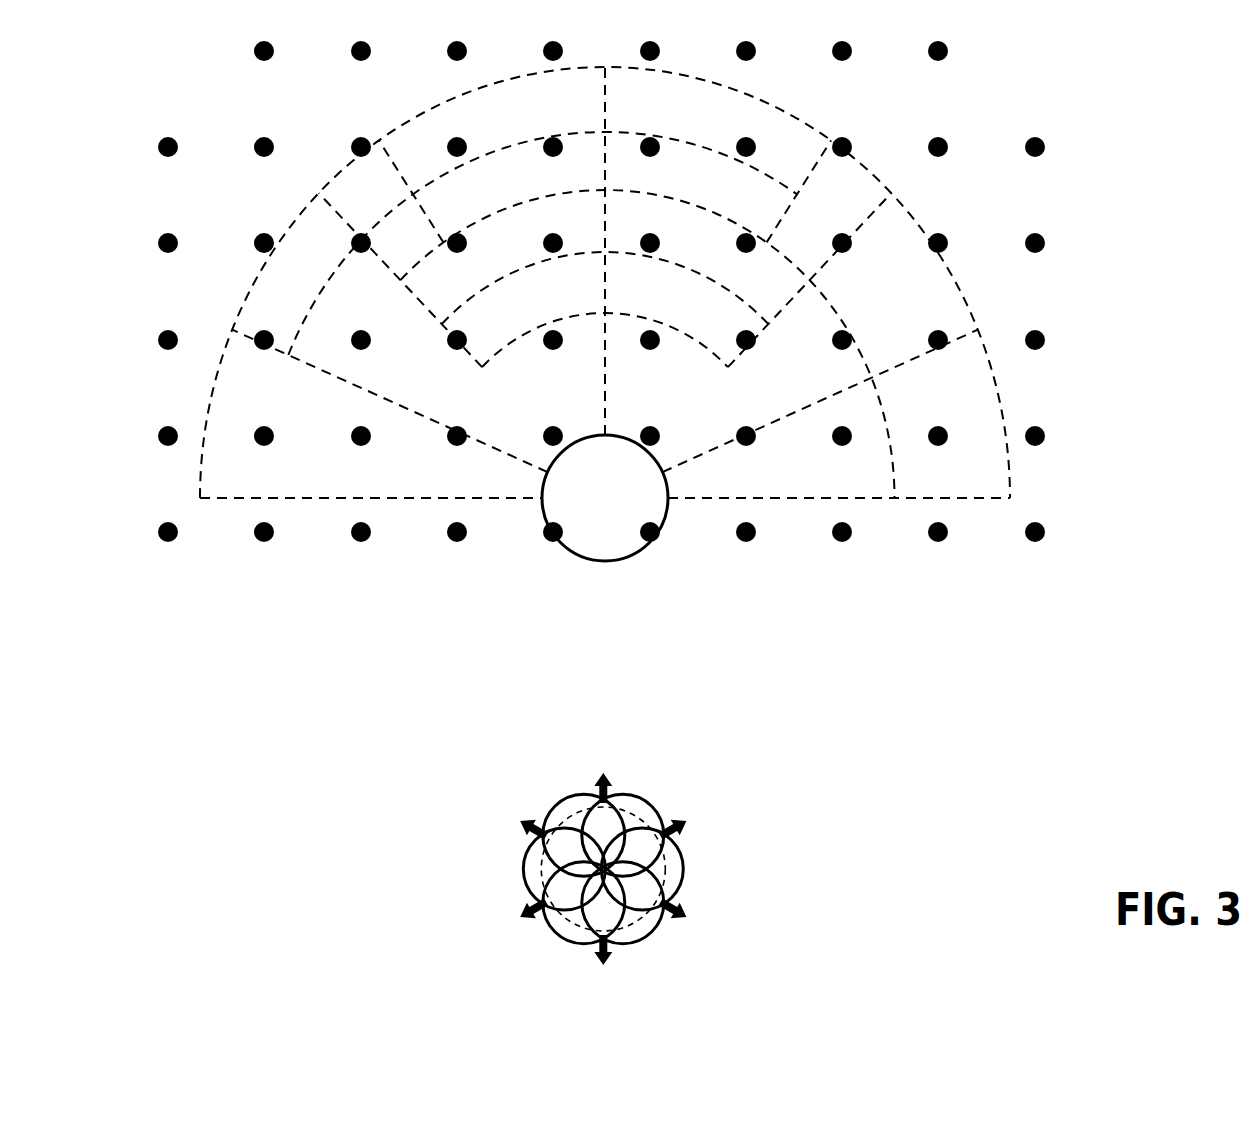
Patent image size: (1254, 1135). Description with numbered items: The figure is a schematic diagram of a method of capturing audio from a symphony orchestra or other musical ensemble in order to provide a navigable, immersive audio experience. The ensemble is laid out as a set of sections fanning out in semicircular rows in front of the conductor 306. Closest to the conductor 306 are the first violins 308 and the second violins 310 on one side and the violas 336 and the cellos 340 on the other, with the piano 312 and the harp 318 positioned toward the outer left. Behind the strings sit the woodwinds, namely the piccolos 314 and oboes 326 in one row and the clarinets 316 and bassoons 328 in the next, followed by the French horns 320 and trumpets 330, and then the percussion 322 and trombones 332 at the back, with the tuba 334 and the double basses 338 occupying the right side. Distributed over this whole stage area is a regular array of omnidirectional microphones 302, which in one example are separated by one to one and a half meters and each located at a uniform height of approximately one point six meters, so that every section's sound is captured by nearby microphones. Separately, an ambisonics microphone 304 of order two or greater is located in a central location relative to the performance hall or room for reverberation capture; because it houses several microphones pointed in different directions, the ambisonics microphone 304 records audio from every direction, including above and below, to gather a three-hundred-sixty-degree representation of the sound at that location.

The omnidirectional microphones 302 is at (750, 145).
The ambisonics microphone 304 is at (497, 789).
The conductor 306 is at (627, 530).
The first violins 308 is at (432, 492).
The second violins 310 is at (575, 406).
The piano 312 is at (298, 312).
The piccolos 314 is at (522, 324).
The clarinets 316 is at (517, 262).
The harp 318 is at (397, 228).
The French horns 320 is at (483, 210).
The percussion 322 is at (495, 128).
The oboes 326 is at (725, 324).
The bassoons 328 is at (725, 262).
The trumpets 330 is at (757, 210).
The trombones 332 is at (757, 128).
The tuba 334 is at (830, 244).
The violas 336 is at (722, 406).
The double basses 338 is at (912, 351).
The cellos 340 is at (845, 494).